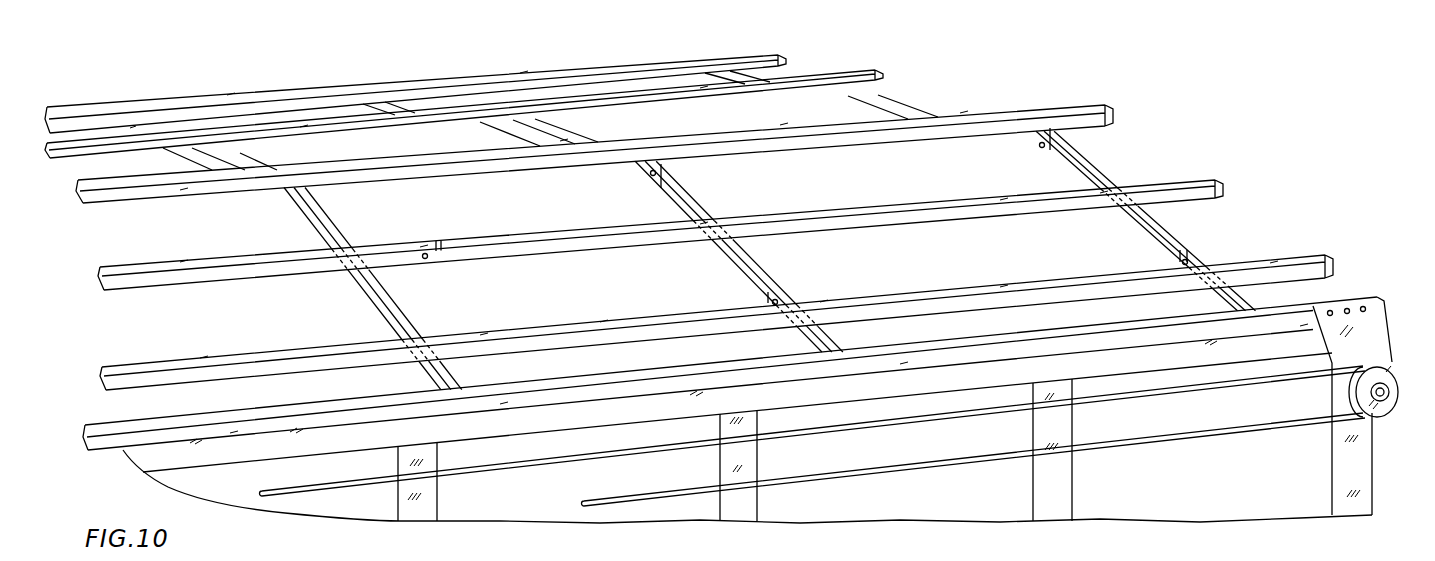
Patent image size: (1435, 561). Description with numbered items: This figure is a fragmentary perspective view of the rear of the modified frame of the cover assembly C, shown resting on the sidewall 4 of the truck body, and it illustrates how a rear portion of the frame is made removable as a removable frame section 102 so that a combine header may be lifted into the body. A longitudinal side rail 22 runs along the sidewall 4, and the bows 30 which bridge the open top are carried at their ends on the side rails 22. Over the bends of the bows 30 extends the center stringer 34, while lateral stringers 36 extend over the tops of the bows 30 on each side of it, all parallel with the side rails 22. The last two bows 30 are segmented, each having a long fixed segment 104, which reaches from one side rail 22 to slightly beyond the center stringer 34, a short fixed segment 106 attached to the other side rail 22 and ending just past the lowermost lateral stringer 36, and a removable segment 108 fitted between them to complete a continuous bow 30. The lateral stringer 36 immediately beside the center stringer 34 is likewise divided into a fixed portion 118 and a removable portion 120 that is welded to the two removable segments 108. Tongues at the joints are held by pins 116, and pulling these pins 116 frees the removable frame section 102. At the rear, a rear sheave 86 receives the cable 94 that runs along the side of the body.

The lateral stringer 36 is at (292, 128).
The center stringer 34 is at (191, 198).
The bow 30 is at (505, 140).
The fixed segment 104 is at (675, 170).
The removable frame section 102 is at (680, 223).
The fixed portion 118 is at (256, 275).
The removable portion 120 is at (924, 230).
The removable segment 108 is at (767, 274).
The fixed segment 106 is at (829, 334).
The pin 116 is at (432, 260).
The cover assembly C is at (1122, 144).
The sidewall 4 is at (808, 498).
The longitudinal side rail 22 is at (492, 403).
The cable 94 is at (1137, 398).
The rear sheave 86 is at (1387, 418).